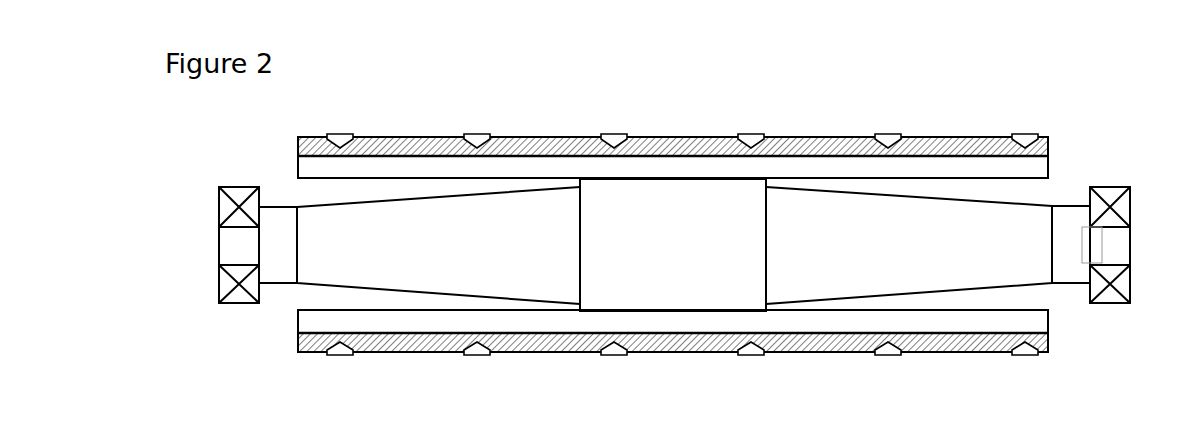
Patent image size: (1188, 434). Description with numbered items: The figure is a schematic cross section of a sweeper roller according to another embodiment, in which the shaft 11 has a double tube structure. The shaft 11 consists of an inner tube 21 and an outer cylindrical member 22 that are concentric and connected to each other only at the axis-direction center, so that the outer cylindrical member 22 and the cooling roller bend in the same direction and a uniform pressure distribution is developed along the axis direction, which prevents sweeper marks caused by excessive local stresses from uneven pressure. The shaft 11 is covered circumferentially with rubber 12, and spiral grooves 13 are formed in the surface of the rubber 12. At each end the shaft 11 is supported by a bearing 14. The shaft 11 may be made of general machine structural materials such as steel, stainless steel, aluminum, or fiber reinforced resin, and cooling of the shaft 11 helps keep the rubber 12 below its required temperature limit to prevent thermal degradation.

The shaft 11 is at (1061, 187).
The rubber 12 is at (717, 140).
The spiral grooves 13 is at (341, 134).
The bearing 14 is at (1129, 212).
The inner tube 21 is at (530, 203).
The outer cylindrical member 22 is at (911, 165).